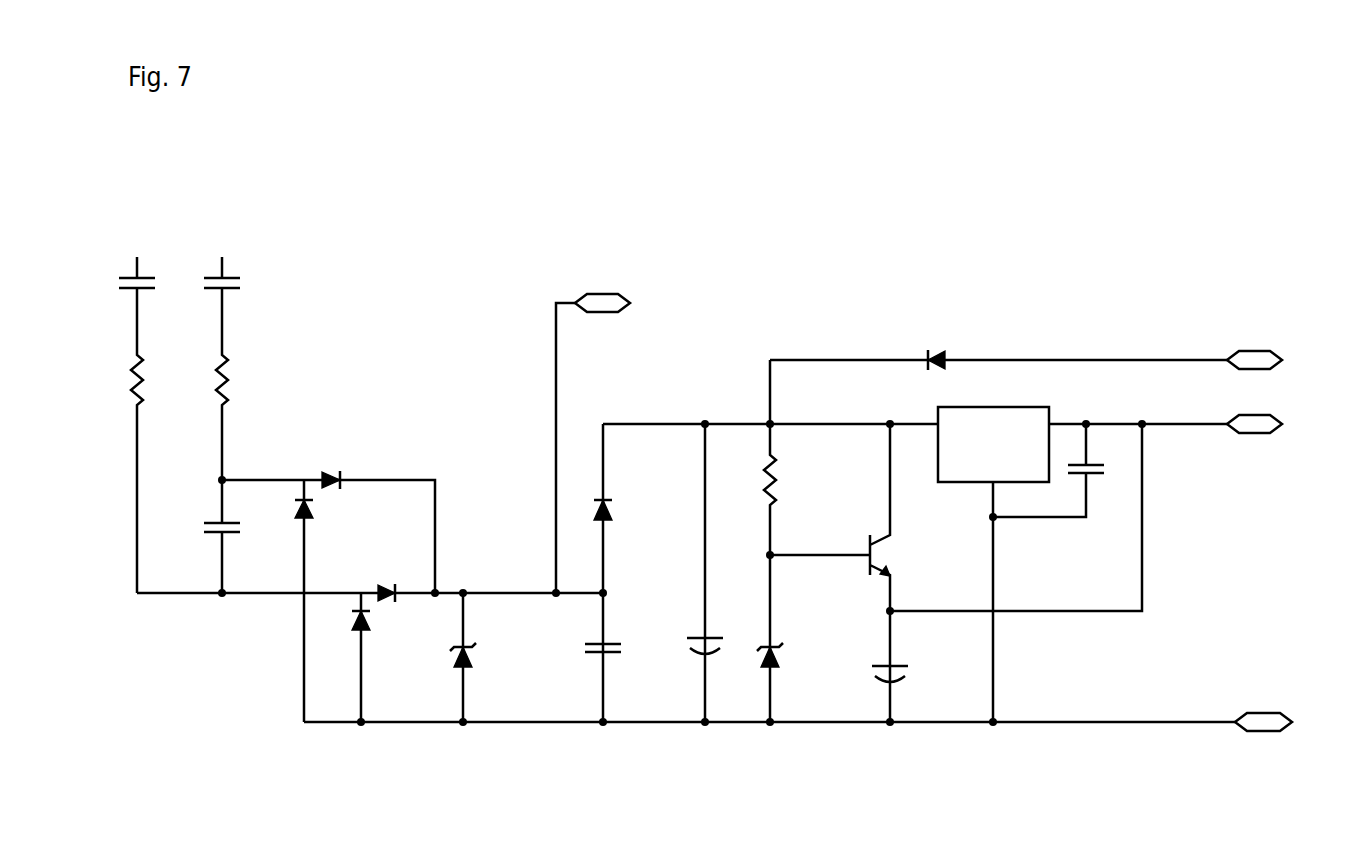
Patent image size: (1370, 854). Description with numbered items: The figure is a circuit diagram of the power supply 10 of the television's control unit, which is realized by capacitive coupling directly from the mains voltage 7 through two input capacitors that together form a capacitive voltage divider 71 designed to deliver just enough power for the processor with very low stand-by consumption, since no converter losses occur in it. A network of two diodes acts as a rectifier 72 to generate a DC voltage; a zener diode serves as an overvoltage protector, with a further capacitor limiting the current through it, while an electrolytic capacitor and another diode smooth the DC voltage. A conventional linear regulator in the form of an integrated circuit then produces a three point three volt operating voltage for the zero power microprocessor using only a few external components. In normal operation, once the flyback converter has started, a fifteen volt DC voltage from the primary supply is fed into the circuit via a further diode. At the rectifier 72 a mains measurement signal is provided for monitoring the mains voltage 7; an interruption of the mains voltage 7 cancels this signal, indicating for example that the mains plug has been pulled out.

The mains voltage 7 is at (190, 203).
The capacitive voltage divider 71 is at (296, 317).
The rectifier 72 is at (408, 454).
The power supply 10 is at (1060, 288).